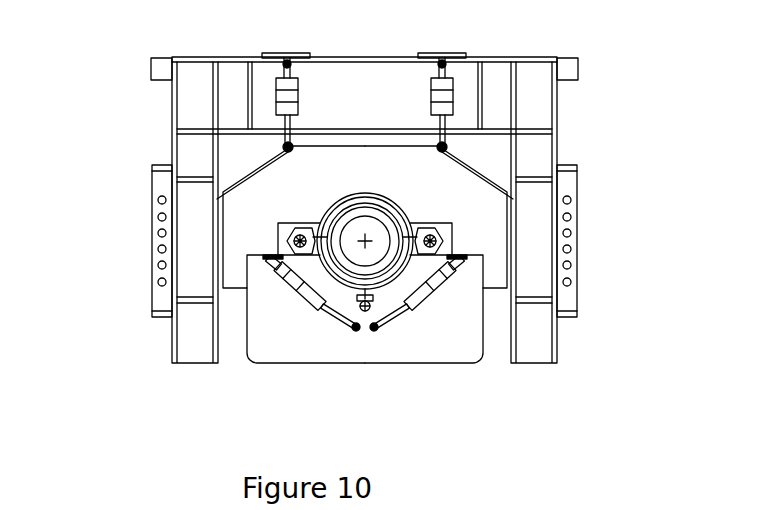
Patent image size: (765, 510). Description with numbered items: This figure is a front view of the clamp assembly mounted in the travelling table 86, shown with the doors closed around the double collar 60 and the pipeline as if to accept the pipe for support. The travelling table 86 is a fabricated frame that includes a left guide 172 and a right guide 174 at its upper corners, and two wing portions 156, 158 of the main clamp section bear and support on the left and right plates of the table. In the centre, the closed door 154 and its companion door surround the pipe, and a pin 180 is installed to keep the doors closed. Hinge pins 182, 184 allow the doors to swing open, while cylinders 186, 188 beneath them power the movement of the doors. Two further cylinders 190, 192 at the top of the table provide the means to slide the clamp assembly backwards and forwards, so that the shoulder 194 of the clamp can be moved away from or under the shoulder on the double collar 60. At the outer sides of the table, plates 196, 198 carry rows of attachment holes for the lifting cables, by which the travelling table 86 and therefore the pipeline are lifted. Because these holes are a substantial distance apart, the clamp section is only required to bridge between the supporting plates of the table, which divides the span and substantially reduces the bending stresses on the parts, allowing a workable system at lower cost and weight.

The double collar 60 is at (408, 262).
The travelling table 86 is at (612, 180).
The door 154 is at (403, 243).
The wing portion 156 is at (240, 253).
The wing portion 158 is at (498, 248).
The left guide 172 is at (151, 68).
The right guide 174 is at (578, 72).
The pin 180 is at (362, 322).
The hinge pin 182 is at (302, 228).
The hinge pin 184 is at (430, 232).
The cylinder 186 is at (300, 272).
The cylinder 188 is at (416, 290).
The cylinder 190 is at (300, 92).
The cylinder 192 is at (453, 92).
The shoulder 194 is at (348, 203).
The plate 196 is at (153, 247).
The plate 198 is at (578, 257).